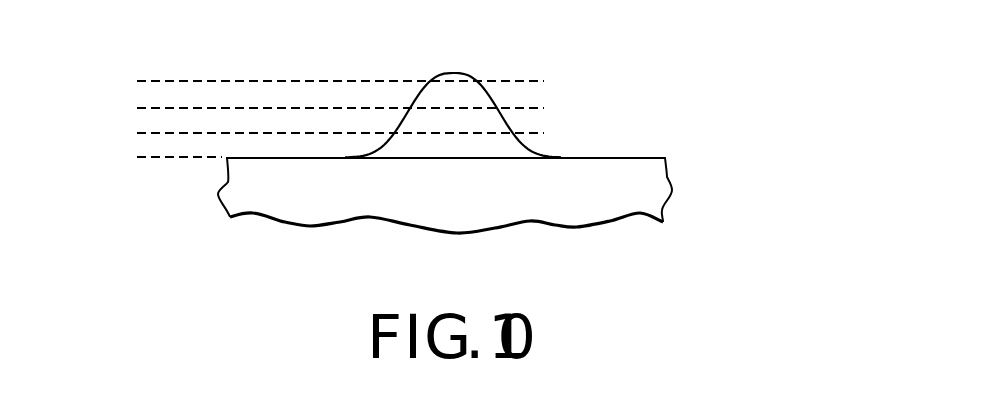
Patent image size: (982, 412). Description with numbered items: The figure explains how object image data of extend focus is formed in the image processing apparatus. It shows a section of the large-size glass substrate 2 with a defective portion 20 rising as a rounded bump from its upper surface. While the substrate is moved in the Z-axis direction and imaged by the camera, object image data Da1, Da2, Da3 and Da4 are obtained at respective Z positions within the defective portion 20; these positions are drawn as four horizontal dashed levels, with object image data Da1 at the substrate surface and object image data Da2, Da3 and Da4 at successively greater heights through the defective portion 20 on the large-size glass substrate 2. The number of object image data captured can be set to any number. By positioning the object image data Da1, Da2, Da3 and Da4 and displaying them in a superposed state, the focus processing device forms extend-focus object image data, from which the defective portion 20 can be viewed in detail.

The large-size glass substrate 2 is at (614, 157).
The defective portion 20 is at (458, 73).
The object image data Da1 is at (155, 157).
The object image data Da2 is at (316, 127).
The object image data Da3 is at (316, 97).
The object image data Da4 is at (316, 67).